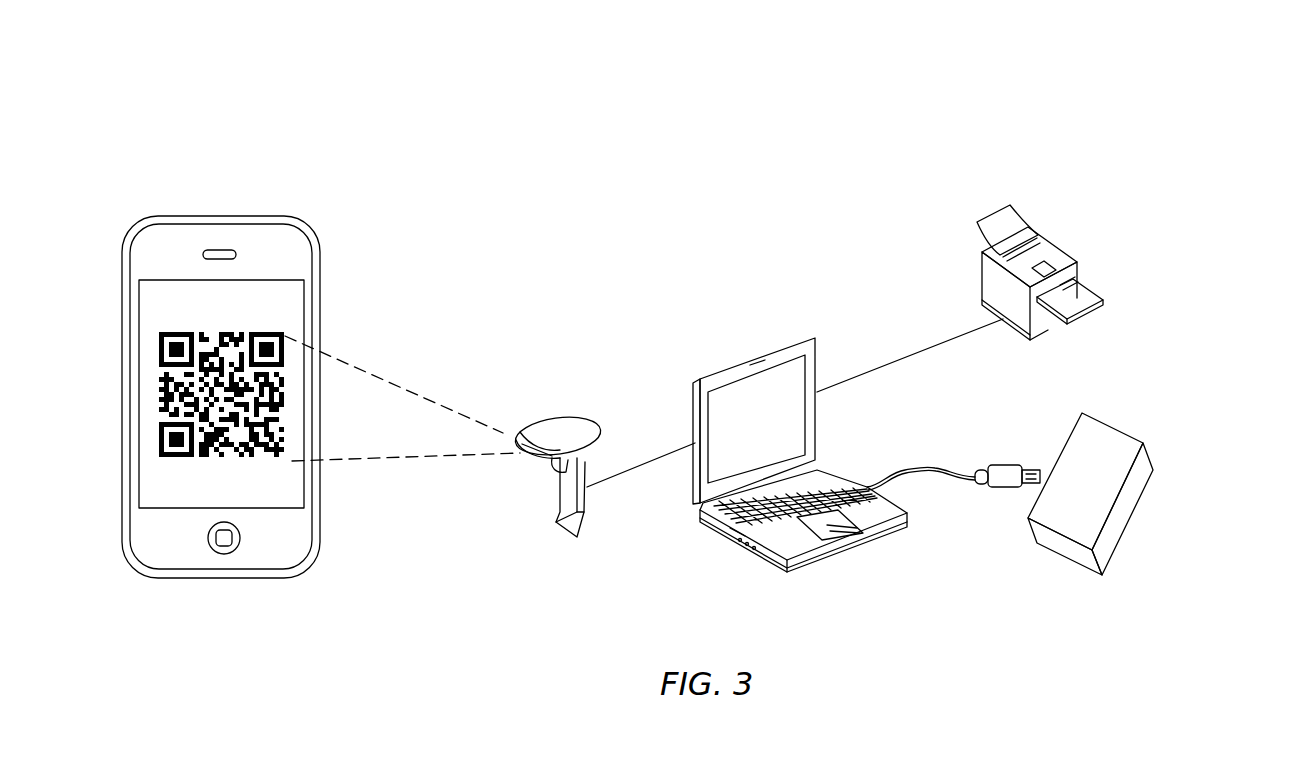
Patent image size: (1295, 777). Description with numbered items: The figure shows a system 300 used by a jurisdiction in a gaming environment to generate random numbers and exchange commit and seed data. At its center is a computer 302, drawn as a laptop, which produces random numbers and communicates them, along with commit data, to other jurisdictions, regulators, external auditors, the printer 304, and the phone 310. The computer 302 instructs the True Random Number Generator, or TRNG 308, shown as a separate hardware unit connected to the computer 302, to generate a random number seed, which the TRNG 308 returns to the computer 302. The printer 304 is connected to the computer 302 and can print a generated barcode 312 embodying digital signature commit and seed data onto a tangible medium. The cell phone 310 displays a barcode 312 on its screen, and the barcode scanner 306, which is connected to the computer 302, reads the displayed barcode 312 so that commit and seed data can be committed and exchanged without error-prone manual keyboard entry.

The system 300 is at (1217, 56).
The computer 302 is at (752, 360).
The printer 304 is at (1067, 248).
The barcode scanner 306 is at (552, 418).
The True Random Number Generator (TRNG) 308 is at (1147, 448).
The cell phone 310 is at (325, 282).
The barcode 312 is at (214, 331).